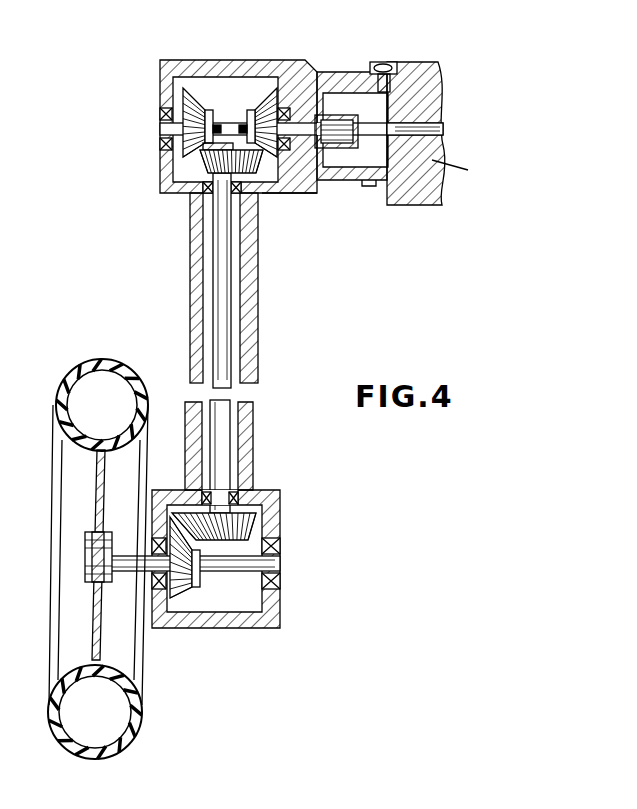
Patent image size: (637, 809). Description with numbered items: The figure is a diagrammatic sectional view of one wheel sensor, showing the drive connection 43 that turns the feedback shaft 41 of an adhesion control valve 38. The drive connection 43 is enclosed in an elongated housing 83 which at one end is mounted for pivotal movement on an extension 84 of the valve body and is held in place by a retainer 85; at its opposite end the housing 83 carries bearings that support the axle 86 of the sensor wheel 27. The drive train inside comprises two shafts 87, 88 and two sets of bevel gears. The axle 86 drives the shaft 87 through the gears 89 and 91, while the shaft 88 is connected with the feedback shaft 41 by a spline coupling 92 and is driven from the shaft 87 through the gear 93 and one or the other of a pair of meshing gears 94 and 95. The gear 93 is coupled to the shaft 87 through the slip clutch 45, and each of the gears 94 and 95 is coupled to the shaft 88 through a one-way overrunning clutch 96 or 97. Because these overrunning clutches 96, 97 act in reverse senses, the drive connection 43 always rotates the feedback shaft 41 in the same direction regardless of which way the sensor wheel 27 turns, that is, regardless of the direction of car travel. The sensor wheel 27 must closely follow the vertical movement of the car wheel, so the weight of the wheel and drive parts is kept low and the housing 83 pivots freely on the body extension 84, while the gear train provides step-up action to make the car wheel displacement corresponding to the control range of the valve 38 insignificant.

The sensor wheel 27 is at (58, 400).
The adhesion control valve 38 is at (424, 60).
The feedback shaft 41 is at (358, 185).
The drive connection 43 is at (183, 241).
The slip clutch 45 is at (184, 195).
The elongated housing 83 is at (258, 344).
The extension of the valve body 84 is at (331, 92).
The retainer 85 is at (381, 64).
The axle 86 is at (226, 590).
The shaft 87 is at (232, 363).
The shaft 88 is at (230, 150).
The gear 89 is at (183, 592).
The gear 91 is at (250, 536).
The spline coupling 92 is at (340, 150).
The gear 93 is at (268, 190).
The gear 94 is at (188, 96).
The gear 95 is at (268, 96).
The one-way overrunning clutch 96 is at (208, 128).
The one-way overrunning clutch 97 is at (246, 128).